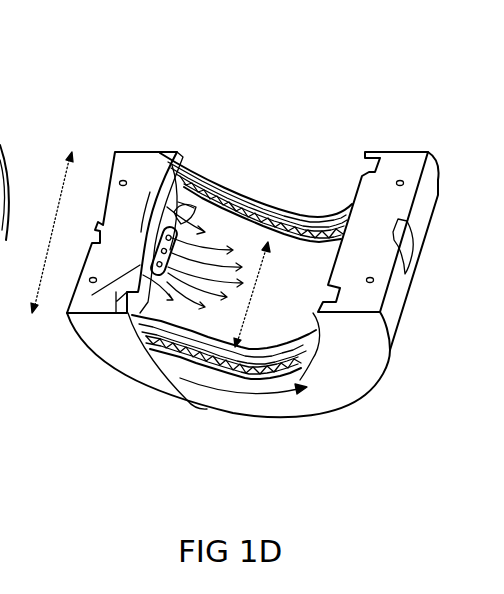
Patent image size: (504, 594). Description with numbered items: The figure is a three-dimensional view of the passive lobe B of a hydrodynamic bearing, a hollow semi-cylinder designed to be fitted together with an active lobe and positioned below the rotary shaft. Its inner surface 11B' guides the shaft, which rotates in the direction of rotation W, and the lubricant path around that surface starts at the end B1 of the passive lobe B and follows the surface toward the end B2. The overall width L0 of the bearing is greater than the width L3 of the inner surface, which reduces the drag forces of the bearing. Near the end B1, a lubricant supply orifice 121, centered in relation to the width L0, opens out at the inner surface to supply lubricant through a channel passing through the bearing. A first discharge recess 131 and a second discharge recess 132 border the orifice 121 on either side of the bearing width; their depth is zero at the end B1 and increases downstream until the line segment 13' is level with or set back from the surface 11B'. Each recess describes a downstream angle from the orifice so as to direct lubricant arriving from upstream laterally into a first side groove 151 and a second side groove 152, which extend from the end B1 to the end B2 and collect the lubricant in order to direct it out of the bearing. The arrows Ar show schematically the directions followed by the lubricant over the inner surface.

The lubricant supply orifice 121 is at (150, 192).
The first discharge recess 131 is at (184, 205).
The first side groove 151 is at (309, 218).
The surface of the passive lobe 11B' is at (256, 212).
The end of the passive lobe B1 is at (125, 232).
The end of the passive lobe B2 is at (378, 251).
The passive lobe B is at (243, 364).
The width of the bearing L0 is at (48, 232).
The width of the inner surface L3 is at (253, 294).
The arrows Ar is at (207, 245).
The direction of rotation W is at (243, 389).
The line segment 13' is at (103, 326).
The second discharge recess 132 is at (135, 314).
The second side groove 152 is at (208, 410).